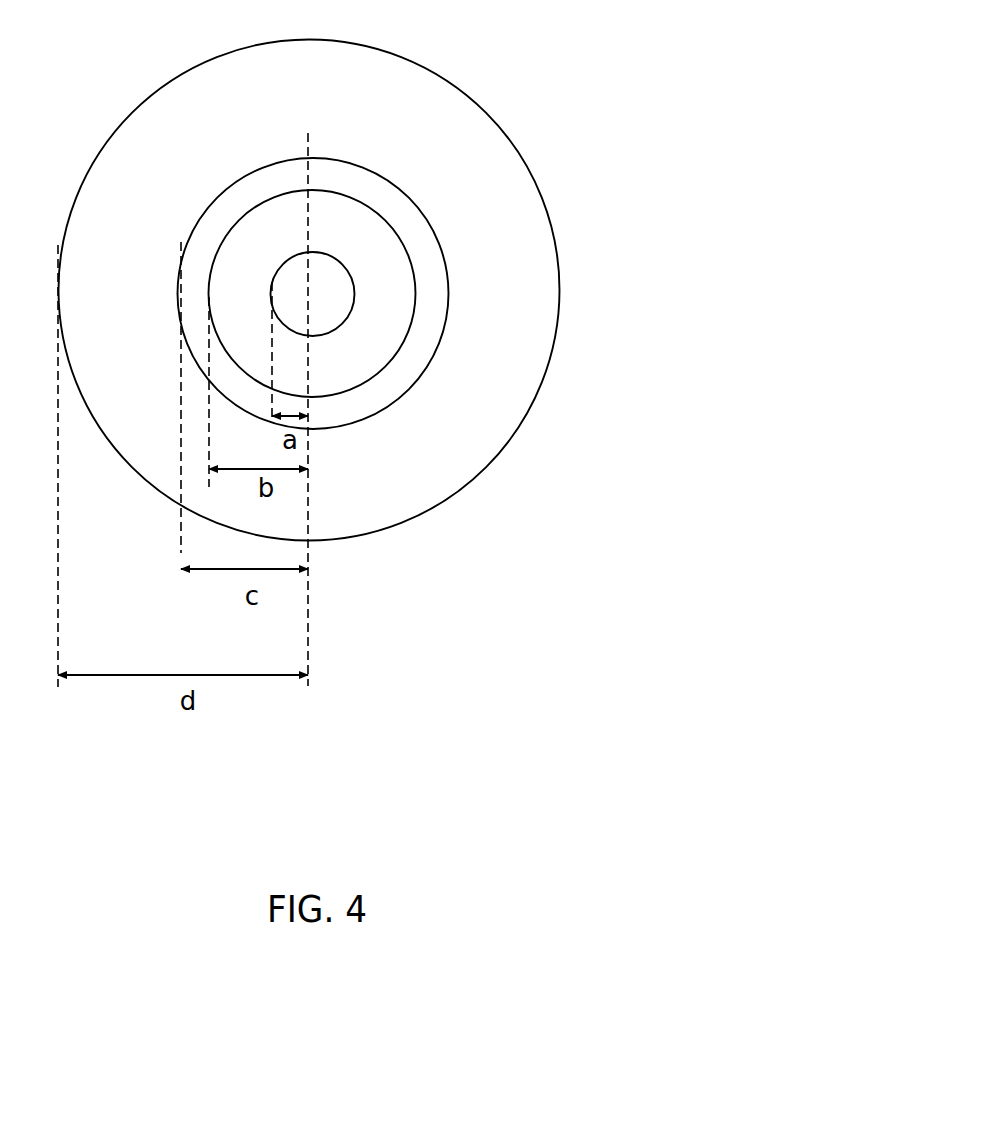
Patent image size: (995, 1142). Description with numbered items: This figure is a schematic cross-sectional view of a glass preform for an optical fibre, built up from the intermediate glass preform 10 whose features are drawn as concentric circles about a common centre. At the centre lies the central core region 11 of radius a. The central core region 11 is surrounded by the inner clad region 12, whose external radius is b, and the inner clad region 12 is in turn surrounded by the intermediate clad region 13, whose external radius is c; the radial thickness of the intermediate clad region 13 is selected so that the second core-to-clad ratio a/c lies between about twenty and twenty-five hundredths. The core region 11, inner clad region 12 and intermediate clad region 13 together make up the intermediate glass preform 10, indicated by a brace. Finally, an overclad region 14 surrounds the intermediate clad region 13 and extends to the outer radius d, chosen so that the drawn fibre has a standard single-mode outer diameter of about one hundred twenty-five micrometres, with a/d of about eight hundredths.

The intermediate glass preform 10 is at (663, 415).
The central core region 11 is at (335, 300).
The inner clad region 12 is at (370, 335).
The intermediate clad region 13 is at (430, 312).
The overclad region 14 is at (477, 193).